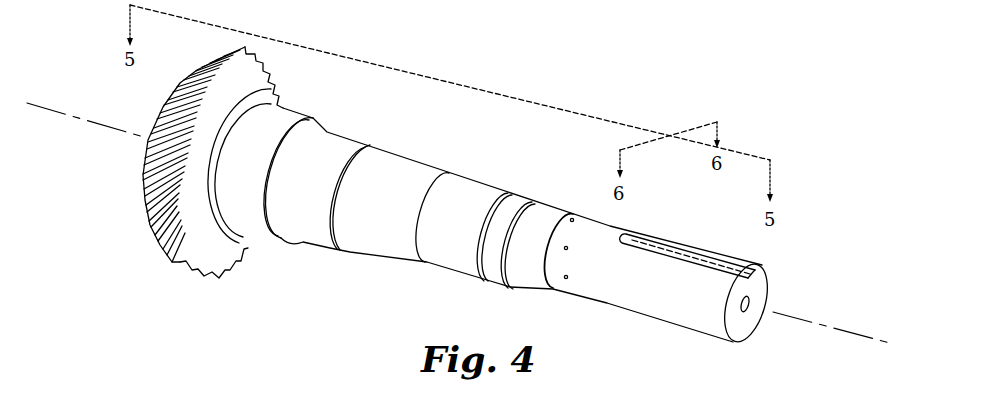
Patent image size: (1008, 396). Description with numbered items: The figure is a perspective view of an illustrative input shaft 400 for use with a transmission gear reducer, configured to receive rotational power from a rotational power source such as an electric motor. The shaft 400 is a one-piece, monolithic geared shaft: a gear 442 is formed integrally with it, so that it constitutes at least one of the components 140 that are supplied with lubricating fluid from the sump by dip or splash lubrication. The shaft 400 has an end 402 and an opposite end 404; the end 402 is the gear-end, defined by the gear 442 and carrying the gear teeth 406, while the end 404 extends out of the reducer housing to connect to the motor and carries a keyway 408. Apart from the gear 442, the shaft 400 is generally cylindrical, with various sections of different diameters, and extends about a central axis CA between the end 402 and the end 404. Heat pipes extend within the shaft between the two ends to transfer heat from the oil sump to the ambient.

The input shaft 400 is at (448, 183).
The end 402 is at (147, 178).
The end 404 is at (755, 292).
The gear teeth 406 is at (165, 107).
The keyway 408 is at (677, 257).
The components 140 is at (158, 300).
The gear 442 is at (198, 242).
The central axis CA is at (857, 331).